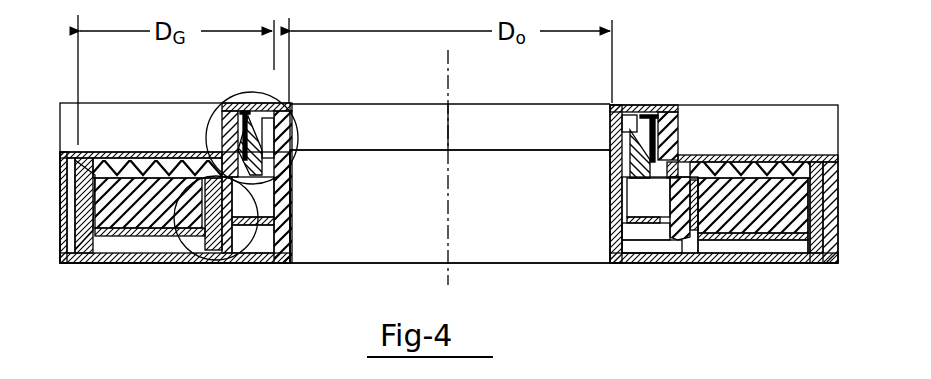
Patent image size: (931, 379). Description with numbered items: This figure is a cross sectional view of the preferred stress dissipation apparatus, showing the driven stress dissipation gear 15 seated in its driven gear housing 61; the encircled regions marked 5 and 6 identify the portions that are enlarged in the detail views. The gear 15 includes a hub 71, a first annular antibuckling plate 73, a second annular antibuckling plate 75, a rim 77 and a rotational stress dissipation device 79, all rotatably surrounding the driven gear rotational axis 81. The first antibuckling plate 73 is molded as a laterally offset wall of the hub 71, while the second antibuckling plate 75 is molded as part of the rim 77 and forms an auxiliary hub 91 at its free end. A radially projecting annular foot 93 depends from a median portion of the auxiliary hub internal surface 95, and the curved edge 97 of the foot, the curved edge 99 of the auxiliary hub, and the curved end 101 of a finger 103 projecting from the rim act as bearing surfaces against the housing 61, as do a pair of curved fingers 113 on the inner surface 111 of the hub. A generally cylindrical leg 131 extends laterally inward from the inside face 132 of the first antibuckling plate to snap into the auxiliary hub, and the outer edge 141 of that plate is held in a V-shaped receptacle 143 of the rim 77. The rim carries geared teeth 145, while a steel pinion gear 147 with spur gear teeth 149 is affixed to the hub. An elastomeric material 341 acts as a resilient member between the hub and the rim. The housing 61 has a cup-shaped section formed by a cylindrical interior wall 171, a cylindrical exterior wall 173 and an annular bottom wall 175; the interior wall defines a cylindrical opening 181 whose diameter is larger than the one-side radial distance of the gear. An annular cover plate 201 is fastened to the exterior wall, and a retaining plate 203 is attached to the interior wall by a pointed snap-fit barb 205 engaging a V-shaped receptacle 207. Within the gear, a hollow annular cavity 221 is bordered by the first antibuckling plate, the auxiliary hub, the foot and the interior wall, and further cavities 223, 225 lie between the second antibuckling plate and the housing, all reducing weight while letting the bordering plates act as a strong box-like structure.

The detail circle for FIG. 5 is at (284, 100).
The detail circle for FIG. 6 is at (246, 253).
The driven stress dissipation gear 15 is at (145, 245).
The driven gear housing 61 is at (97, 272).
The hub 71 is at (677, 152).
The first annular antibuckling plate 73 is at (793, 170).
The second annular antibuckling plate 75 is at (745, 240).
The rim 77 is at (838, 185).
The rotational stress dissipation device 79 is at (763, 217).
The driven gear rotational axis 81 is at (448, 100).
The auxiliary hub 91 is at (680, 240).
The radially projecting annular foot 93 is at (650, 235).
The auxiliary hub internal surface 95 is at (655, 202).
The curved edge of foot 97 is at (630, 228).
The curved edge of auxiliary hub 99 is at (673, 240).
The curved end of finger 101 is at (803, 253).
The finger 103 is at (790, 258).
The inner surface of hub 111 is at (610, 150).
The curved fingers 113 is at (613, 140).
The generally cylindrical leg 131 is at (722, 157).
The inside face of first antibuckling plate 132 is at (810, 170).
The outer edge of first antibuckling plate 141 is at (97, 165).
The V-shaped receptacle of rim 143 is at (67, 165).
The geared teeth 145 is at (825, 210).
The steel pinion gear 147 is at (662, 118).
The spur gear teeth 149 is at (688, 152).
The interior wall 171 is at (322, 263).
The exterior wall 173 is at (60, 238).
The bottom wall 175 is at (128, 263).
The cylindrical opening 181 is at (410, 237).
The cover plate 201 is at (222, 160).
The retaining plate 203 is at (660, 105).
The pointed snap-fit barb 205 is at (697, 225).
The V-shaped receptacle 207 is at (670, 255).
The annular cavity 221 is at (292, 210).
The annular cavity 223 is at (294, 228).
The annular cavity 225 is at (163, 243).
The elastomeric material 341 is at (82, 262).